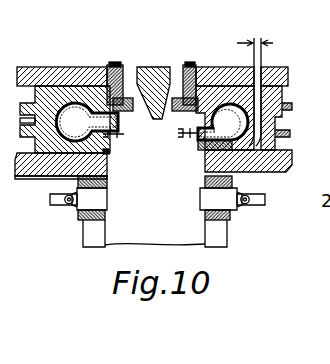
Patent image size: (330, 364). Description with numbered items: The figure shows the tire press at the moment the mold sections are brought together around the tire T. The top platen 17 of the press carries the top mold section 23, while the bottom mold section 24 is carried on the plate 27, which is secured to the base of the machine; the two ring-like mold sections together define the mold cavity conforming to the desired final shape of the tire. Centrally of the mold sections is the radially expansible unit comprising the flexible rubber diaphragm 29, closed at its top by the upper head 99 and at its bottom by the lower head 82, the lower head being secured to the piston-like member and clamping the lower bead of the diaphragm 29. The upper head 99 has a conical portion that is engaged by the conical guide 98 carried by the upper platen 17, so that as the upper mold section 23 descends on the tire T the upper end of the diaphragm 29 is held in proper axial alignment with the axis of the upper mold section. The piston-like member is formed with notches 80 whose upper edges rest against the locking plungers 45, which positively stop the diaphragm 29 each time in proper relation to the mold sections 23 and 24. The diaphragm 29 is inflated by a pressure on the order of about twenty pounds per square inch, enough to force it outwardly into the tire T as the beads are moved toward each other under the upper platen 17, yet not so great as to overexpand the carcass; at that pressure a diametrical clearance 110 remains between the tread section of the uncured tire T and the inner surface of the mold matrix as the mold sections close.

The top platen 17 is at (281, 68).
The conical guide 98 is at (156, 68).
The diametrical clearance 110 is at (249, 84).
The top mold section 23 is at (301, 100).
The bottom mold section 24 is at (297, 134).
The plate 27 is at (283, 173).
The diaphragm 29 is at (82, 100).
The upper head 99 is at (123, 133).
The lower head 82 is at (118, 136).
The locking plungers 45 is at (214, 198).
The notches 80 is at (197, 213).
The tire T is at (66, 88).